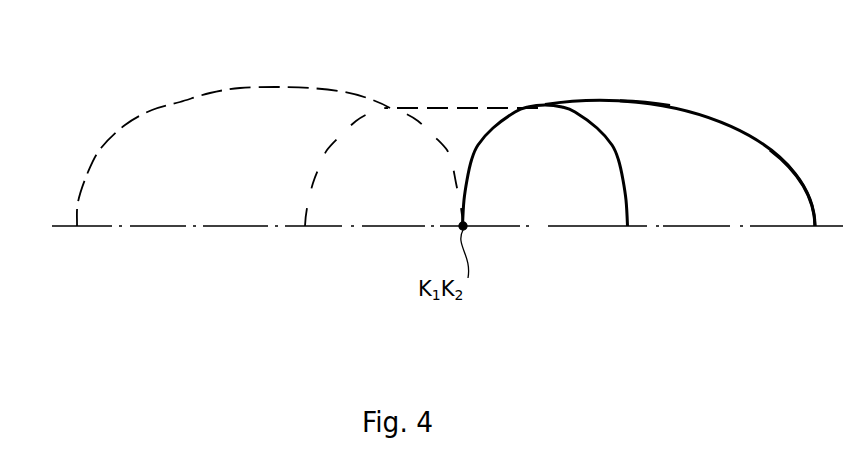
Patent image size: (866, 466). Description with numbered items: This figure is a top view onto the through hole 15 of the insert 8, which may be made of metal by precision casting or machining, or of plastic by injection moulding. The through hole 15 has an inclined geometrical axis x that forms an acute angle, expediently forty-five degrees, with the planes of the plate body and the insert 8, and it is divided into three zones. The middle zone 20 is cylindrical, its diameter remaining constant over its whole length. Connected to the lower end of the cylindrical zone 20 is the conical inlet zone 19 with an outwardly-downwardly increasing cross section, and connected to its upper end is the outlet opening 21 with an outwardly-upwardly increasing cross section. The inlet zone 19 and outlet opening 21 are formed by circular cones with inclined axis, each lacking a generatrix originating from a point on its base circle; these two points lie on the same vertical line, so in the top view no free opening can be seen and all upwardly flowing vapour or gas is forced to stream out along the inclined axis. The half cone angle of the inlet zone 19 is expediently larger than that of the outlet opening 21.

The insert 8 is at (737, 122).
The through hole 15 is at (642, 106).
The inlet zone 19 is at (163, 147).
The middle zone 20 is at (375, 162).
The outlet opening 21 is at (778, 183).